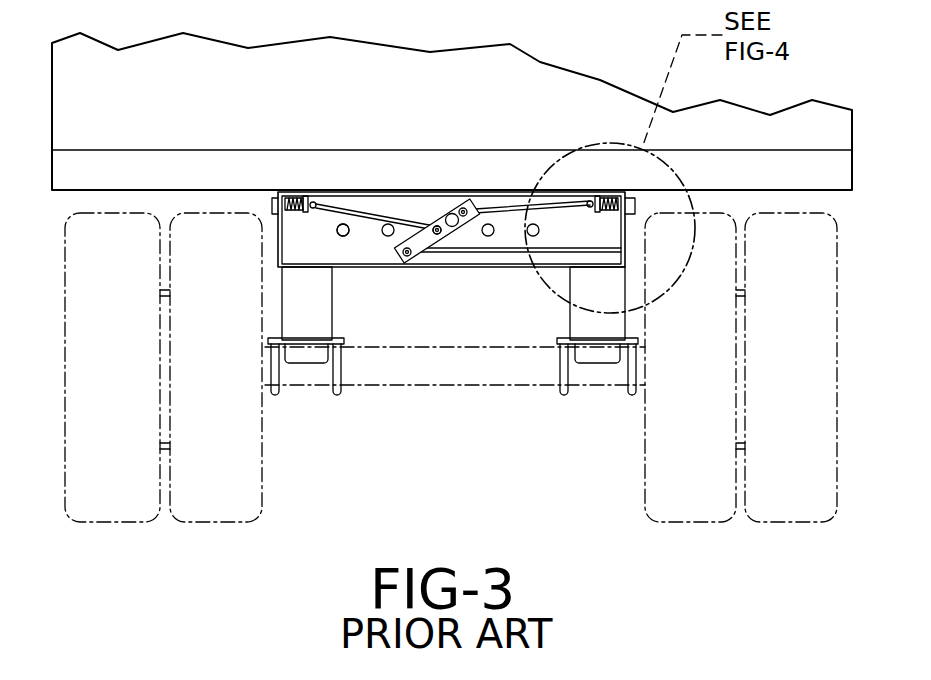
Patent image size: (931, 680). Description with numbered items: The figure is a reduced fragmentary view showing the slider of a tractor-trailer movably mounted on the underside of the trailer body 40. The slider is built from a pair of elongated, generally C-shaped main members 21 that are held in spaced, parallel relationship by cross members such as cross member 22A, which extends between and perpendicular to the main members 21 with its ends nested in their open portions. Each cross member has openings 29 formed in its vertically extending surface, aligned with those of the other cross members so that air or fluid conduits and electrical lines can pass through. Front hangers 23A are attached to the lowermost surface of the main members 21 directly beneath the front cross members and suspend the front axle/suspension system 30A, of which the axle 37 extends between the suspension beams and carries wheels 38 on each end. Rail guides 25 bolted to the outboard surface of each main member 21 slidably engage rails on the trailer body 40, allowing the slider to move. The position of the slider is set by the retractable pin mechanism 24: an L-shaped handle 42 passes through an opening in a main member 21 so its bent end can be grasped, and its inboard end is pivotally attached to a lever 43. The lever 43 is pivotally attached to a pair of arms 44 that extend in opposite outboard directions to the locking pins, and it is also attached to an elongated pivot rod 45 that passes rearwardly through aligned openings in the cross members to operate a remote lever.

The main member 21 is at (277, 247).
The cross member 22A is at (375, 249).
The front hanger 23A is at (310, 324).
The retractable pin mechanism 24 is at (469, 189).
The rail guide 25 is at (274, 214).
The opening 29 is at (340, 226).
The front axle/suspension system 30A is at (402, 370).
The axle 37 is at (453, 360).
The wheels 38 is at (130, 378).
The trailer body 40 is at (522, 92).
The handle 42 is at (628, 248).
The lever 43 is at (418, 243).
The arms 44 is at (401, 219).
The pivot rod 45 is at (445, 215).